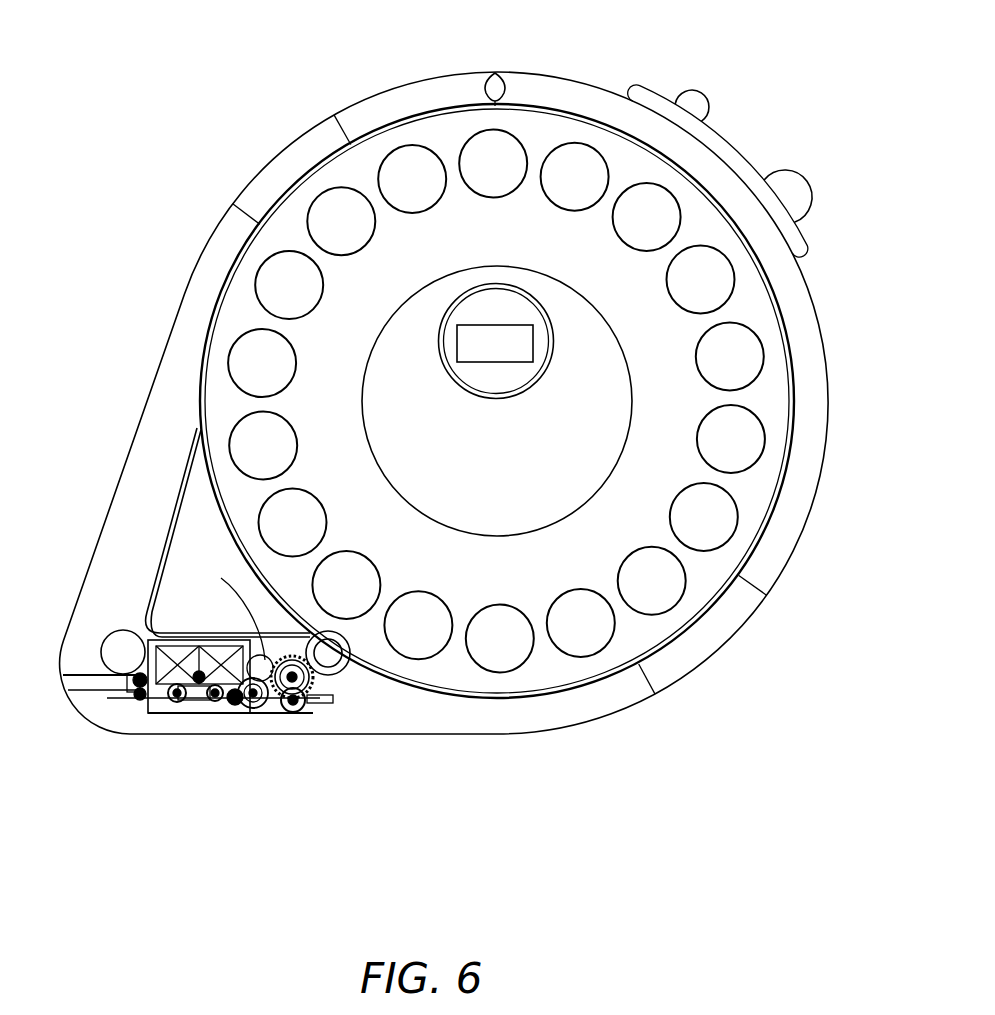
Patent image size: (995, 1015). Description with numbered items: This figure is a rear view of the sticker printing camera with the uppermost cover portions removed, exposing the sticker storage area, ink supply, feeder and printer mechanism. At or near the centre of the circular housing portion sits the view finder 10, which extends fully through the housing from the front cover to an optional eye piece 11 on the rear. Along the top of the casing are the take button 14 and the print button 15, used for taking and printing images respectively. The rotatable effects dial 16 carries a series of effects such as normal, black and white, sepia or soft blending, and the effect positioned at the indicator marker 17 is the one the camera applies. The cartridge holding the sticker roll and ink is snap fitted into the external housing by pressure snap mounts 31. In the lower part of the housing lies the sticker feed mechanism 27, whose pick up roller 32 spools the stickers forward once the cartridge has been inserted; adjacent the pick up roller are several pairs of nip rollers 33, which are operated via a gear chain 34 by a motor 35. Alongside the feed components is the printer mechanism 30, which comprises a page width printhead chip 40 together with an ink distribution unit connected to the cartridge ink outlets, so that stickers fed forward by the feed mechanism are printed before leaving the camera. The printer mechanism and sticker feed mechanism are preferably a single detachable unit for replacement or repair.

The view finder 10 is at (510, 352).
The eye piece 11 is at (492, 394).
The take button 14 is at (782, 188).
The print button 15 is at (693, 100).
The effects dial 16 is at (755, 306).
The indicator marker 17 is at (495, 70).
The sticker feed mechanism 27 is at (327, 720).
The printer mechanism 30 is at (256, 718).
The pressure snap mounts 31 is at (693, 652).
The pick up roller 32 is at (347, 670).
The nip rollers 33 is at (243, 657).
The gear chain 34 is at (163, 713).
The motor 35 is at (117, 647).
The page width printhead chip 40 is at (198, 717).